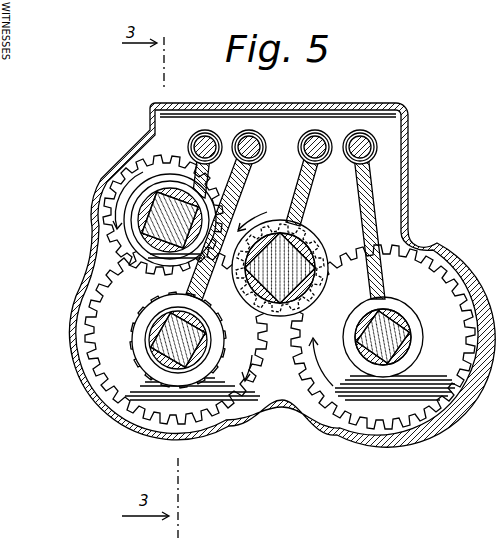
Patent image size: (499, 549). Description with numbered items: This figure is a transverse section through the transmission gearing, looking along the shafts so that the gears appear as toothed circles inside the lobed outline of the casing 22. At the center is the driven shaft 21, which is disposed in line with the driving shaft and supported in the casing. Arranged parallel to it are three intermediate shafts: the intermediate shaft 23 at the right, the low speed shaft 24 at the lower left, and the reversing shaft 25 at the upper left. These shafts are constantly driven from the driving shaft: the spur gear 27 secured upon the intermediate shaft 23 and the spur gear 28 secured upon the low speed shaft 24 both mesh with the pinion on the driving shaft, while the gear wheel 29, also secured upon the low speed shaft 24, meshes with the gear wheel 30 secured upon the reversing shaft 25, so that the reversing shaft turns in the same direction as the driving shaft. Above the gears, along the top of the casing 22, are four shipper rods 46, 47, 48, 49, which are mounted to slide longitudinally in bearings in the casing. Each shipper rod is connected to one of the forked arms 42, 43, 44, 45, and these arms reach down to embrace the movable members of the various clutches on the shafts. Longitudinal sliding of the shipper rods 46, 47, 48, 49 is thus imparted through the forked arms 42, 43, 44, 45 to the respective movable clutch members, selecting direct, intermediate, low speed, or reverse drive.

The driven shaft 21 is at (306, 262).
The casing 22 is at (409, 162).
The intermediate shaft 23 is at (398, 344).
The low speed shaft 24 is at (150, 354).
The reversing shaft 25 is at (135, 232).
The spur gear 27 is at (383, 337).
The spur gear 28 is at (100, 307).
The gear wheel 29 is at (145, 383).
The gear wheel 30 is at (113, 200).
The forked arm 42 is at (306, 191).
The forked arm 43 is at (382, 201).
The forked arm 44 is at (240, 192).
The forked arm 45 is at (170, 205).
The shipper rod 46 is at (322, 139).
The shipper rod 47 is at (366, 139).
The shipper rod 48 is at (262, 141).
The shipper rod 49 is at (197, 142).